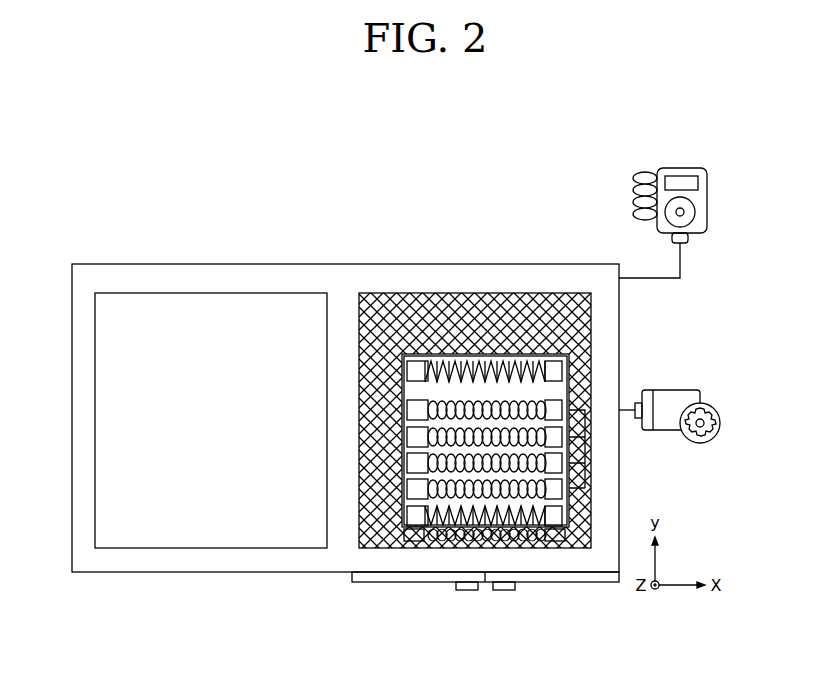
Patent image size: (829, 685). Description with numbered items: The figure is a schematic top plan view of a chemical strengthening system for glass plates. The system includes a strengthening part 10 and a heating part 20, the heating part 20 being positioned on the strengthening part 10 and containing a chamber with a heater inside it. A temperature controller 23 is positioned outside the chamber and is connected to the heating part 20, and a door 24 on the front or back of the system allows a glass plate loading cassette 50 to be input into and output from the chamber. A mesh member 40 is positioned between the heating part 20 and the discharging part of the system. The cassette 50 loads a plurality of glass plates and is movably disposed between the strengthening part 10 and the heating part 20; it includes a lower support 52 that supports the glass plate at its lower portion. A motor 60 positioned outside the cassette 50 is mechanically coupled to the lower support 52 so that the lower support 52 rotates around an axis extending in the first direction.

The strengthening part 10 is at (210, 549).
The heating part 20 is at (340, 262).
The temperature controller 23 is at (707, 200).
The door 24 is at (505, 591).
The mesh member 40 is at (591, 312).
The glass plate loading cassette 50 is at (481, 492).
The lower support 52 is at (418, 492).
The motor 60 is at (676, 388).